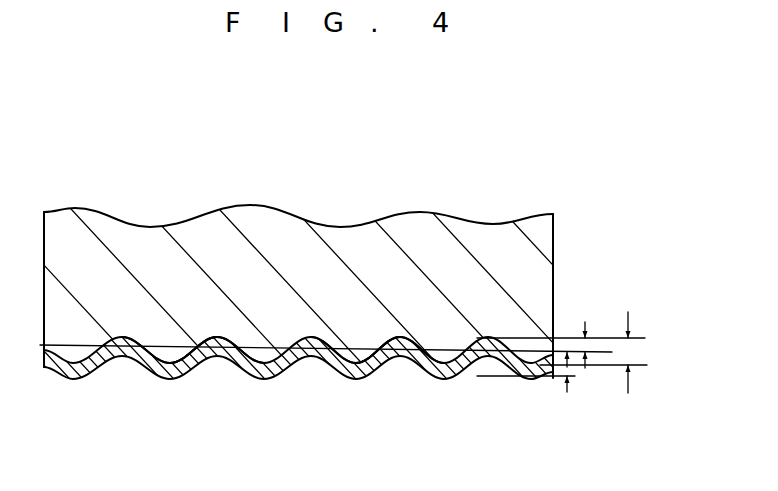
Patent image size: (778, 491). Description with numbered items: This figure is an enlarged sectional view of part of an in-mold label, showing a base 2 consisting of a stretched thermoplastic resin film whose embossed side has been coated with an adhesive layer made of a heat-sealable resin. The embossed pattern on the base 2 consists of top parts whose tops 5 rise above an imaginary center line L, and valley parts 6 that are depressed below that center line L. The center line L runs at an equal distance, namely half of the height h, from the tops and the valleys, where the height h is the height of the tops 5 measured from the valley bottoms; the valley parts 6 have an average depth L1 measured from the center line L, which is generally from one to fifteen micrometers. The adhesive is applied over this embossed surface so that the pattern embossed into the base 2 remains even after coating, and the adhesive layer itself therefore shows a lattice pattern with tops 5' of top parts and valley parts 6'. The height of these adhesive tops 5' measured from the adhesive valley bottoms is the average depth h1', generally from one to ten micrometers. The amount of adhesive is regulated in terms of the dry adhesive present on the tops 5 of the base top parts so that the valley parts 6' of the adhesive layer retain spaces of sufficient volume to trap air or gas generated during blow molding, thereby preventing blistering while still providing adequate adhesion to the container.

The base 2 is at (535, 279).
The top of top part 5 is at (169, 401).
The valley part 6 is at (217, 401).
The top of top part of adhesive layer 5' is at (355, 401).
The valley part of adhesive layer 6' is at (400, 403).
The average depth of valley parts L1 is at (593, 337).
The height of tops h is at (647, 352).
The center line L is at (605, 353).
The average depth of adhesive layer h1' is at (555, 425).